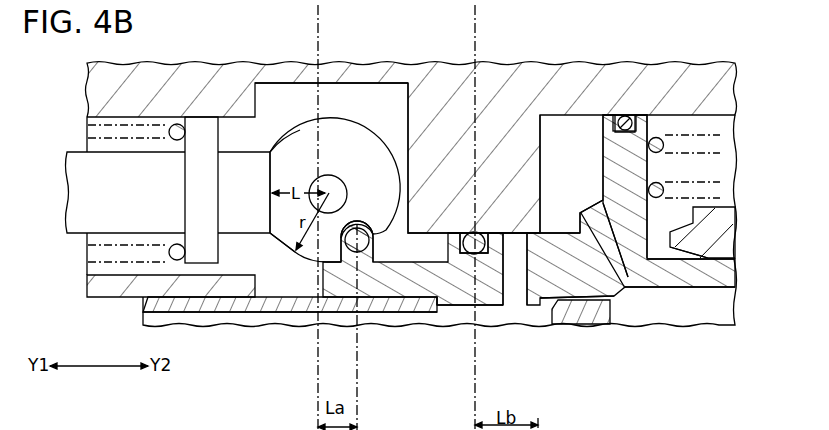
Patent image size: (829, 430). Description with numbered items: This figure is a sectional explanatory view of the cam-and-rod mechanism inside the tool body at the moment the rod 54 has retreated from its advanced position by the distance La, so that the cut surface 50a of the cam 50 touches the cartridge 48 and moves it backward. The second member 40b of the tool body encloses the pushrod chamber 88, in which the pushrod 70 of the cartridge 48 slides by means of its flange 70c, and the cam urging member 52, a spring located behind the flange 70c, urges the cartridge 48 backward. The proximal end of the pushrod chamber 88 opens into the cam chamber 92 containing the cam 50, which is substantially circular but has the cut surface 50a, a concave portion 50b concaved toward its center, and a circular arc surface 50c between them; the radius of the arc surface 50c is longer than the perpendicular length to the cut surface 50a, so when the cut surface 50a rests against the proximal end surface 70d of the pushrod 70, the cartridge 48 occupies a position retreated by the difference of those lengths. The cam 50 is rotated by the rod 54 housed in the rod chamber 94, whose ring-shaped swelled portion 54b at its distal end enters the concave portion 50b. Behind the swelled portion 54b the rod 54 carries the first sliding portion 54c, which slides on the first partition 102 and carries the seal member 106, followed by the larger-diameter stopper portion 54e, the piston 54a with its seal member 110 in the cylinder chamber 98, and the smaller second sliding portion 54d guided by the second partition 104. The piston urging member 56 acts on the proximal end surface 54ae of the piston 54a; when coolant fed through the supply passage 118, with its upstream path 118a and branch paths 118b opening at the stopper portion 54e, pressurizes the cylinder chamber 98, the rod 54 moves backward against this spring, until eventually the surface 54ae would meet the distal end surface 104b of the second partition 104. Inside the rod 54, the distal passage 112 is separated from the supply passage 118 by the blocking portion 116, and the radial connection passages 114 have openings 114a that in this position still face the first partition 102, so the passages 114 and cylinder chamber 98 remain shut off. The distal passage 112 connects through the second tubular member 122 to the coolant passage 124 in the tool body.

The second member 40b is at (167, 73).
The cam chamber 92 is at (343, 93).
The first partition 102 is at (447, 180).
The opening 114a is at (516, 230).
The cylinder chamber 98 is at (583, 132).
The coolant passage 124 is at (103, 300).
The pushrod 70 is at (77, 163).
The cartridge 48 is at (244, 192).
The flange 70c is at (197, 212).
The pushrod chamber 88 is at (103, 148).
The cam urging member 52 is at (177, 141).
The cam 50 is at (368, 147).
The cut surface 50a is at (268, 207).
The concave portion 50b is at (373, 230).
The circular arc surface 50c is at (280, 235).
The proximal end surface 70d is at (272, 168).
The rod 54 is at (402, 277).
The swelled portion 54b is at (363, 253).
The piston 54a is at (612, 164).
The proximal end surface 54ae is at (648, 170).
The first sliding portion 54c is at (582, 250).
The second sliding portion 54d is at (707, 275).
The stopper portion 54e is at (578, 228).
The seal member 110 is at (625, 120).
The piston urging member 56 is at (657, 137).
The seal member 106 is at (467, 254).
The distal passage 112 is at (490, 307).
The connection passage 114 is at (507, 293).
The second partition 104 is at (710, 227).
The distal end surface 104b is at (660, 243).
The blocking portion 116 is at (567, 318).
The supply passage 118 is at (718, 300).
The upstream path 118a is at (703, 304).
The branch path 118b is at (637, 268).
The second tubular member 122 is at (231, 305).
The rod chamber 94 is at (268, 286).